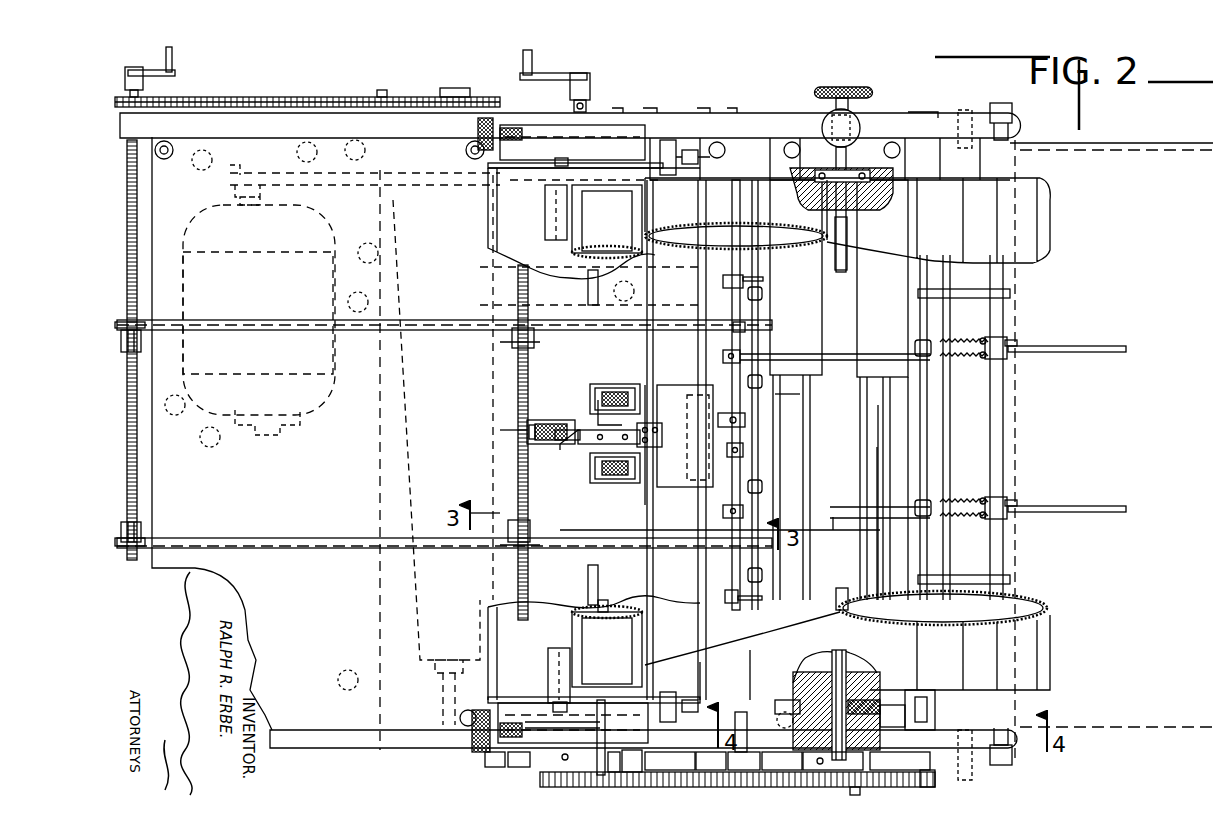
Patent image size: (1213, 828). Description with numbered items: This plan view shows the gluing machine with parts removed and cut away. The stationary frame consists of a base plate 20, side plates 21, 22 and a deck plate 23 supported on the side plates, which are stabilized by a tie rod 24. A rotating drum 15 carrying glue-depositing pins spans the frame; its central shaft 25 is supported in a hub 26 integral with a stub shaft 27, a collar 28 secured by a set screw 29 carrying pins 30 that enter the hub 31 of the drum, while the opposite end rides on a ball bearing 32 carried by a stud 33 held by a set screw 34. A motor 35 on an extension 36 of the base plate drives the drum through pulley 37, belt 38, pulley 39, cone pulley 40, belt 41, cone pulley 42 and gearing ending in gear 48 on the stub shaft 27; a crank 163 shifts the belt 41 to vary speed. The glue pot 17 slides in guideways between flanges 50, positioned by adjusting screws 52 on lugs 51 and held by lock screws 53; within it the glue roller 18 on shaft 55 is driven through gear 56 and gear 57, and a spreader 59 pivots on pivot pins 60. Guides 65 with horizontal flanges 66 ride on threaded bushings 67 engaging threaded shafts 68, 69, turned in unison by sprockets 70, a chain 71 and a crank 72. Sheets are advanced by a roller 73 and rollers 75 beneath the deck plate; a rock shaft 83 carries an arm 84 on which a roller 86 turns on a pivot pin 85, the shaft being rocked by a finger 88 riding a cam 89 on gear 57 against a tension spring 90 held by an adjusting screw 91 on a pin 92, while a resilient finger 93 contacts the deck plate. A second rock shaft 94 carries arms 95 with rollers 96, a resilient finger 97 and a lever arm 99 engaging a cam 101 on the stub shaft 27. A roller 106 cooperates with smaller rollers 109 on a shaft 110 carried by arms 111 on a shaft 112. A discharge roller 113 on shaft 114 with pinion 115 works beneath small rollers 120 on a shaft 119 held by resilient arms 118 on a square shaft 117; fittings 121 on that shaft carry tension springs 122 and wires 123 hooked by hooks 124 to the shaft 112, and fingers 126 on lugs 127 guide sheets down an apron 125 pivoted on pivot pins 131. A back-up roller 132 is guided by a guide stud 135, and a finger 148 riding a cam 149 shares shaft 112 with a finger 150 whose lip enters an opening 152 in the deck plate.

The drum 15 is at (1042, 223).
The glue pot 17 is at (488, 230).
The glue roller 18 is at (570, 228).
The base plate 20 is at (372, 650).
The side plate 21 is at (332, 748).
The side plate 22 is at (318, 118).
The deck plate 23 is at (858, 330).
The tie rod 24 is at (586, 292).
The central shaft 25 is at (848, 258).
The hub 26 is at (866, 680).
The stub shaft 27 is at (839, 793).
The collar 28 is at (868, 706).
The set screw 29 is at (891, 718).
The pins 30 is at (812, 695).
The hub 31 is at (792, 655).
The ball bearing 32 is at (853, 160).
The stud 33 is at (830, 170).
The set screw 34 is at (865, 122).
The motor 35 is at (218, 412).
The extension 36 is at (190, 385).
The pulley 37 is at (230, 173).
The belt 38 is at (322, 175).
The pulley 39 is at (368, 175).
The cone pulley 40 is at (345, 243).
The belt 41 is at (390, 298).
The cone pulley 42 is at (665, 300).
The gear 48 is at (887, 787).
The flanges 50 is at (622, 157).
The lugs 51 is at (670, 140).
The adjusting screw 52 is at (690, 150).
The lock screws 53 is at (478, 128).
The shaft 55 is at (602, 724).
The gear 56 is at (603, 780).
The gear 57 is at (663, 782).
The spreader 59 is at (548, 192).
The pivot pins 60 is at (565, 164).
The guides 65 is at (257, 320).
The horizontal flanges 66 is at (286, 326).
The threaded bushings 67 is at (143, 340).
The threaded shaft 68 is at (518, 387).
The threaded shaft 69 is at (138, 497).
The sprockets 70 is at (180, 100).
The chain 71 is at (340, 98).
The crank 72 is at (173, 54).
The roller 73 is at (500, 430).
The rollers 75 is at (597, 384).
The rock shaft 83 is at (655, 577).
The arm 84 is at (563, 446).
The pivot pin 85 is at (557, 422).
The roller 86 is at (533, 422).
The finger 88 is at (698, 777).
The cam 89 is at (614, 780).
The tension spring 90 is at (640, 780).
The adjusting screw 91 is at (552, 783).
The pin 92 is at (572, 777).
The resilient finger 93 is at (594, 444).
The second rock shaft 94 is at (700, 522).
The arms 95 is at (653, 392).
The rollers 96 is at (615, 386).
The resilient finger 97 is at (610, 430).
The lever arm 99 is at (750, 717).
The cam 101 is at (903, 725).
The roller 106 is at (775, 394).
The smaller rollers 109 is at (764, 484).
The shaft 110 is at (772, 435).
The arms 111 is at (766, 284).
The rock shaft 112 is at (745, 320).
The roller 113 is at (878, 408).
The shaft 114 is at (925, 765).
The pinion 115 is at (933, 783).
The square shaft 117 is at (1000, 450).
The resilient arms 118 is at (968, 292).
The shaft 119 is at (923, 425).
The small rollers 120 is at (917, 355).
The fittings 121 is at (1005, 350).
The tension springs 122 is at (963, 510).
The wires 123 is at (833, 515).
The hooks 124 is at (745, 507).
The apron 125 is at (1153, 722).
The fingers 126 is at (1080, 358).
The lugs 127 is at (1023, 357).
The pivot pins 131 is at (962, 114).
The back-up roller 132 is at (877, 447).
The guide stud 135 is at (826, 120).
The finger 148 is at (780, 760).
The cam 149 is at (815, 760).
The finger 150 is at (663, 405).
The opening 152 is at (596, 412).
The crank 163 is at (548, 74).